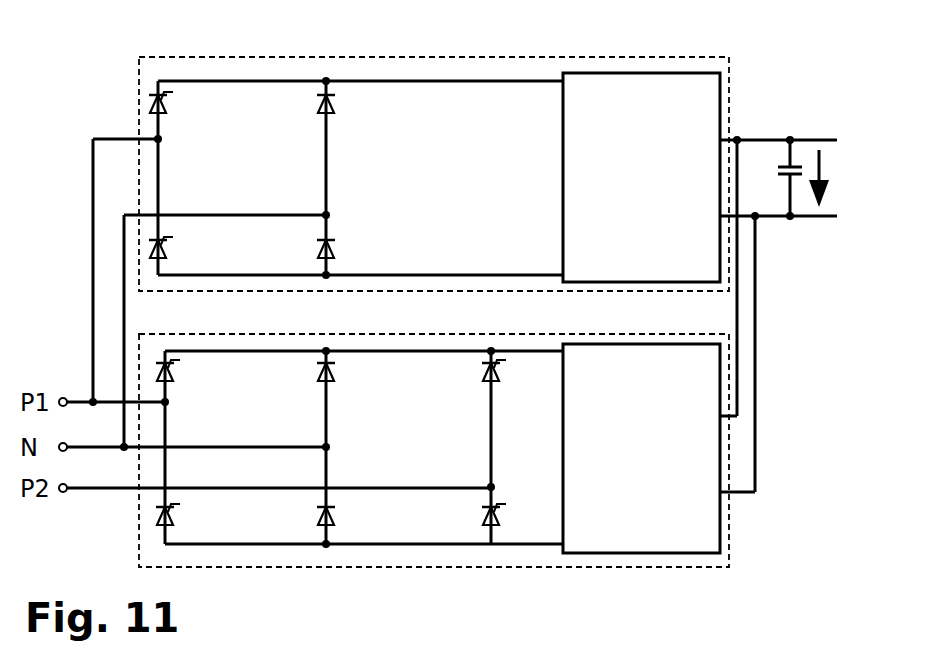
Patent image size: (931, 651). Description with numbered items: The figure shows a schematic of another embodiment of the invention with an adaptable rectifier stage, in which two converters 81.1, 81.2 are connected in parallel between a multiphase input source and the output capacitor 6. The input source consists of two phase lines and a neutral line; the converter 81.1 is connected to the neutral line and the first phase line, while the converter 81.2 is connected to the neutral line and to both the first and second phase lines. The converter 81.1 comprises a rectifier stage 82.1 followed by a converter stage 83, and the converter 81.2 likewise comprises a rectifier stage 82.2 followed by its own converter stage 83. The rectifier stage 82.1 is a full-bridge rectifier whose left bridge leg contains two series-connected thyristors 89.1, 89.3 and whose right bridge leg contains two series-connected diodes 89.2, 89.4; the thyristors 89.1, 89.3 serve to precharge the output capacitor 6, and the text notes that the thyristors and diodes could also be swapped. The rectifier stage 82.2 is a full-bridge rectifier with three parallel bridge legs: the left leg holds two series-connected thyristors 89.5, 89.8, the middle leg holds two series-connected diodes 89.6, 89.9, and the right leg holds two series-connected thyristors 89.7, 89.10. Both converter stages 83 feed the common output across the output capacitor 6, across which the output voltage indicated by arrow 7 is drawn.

The converter 81.1 is at (460, 56).
The converter 81.2 is at (438, 570).
The rectifier stage 82.1 is at (196, 64).
The rectifier stage 82.2 is at (198, 362).
The converter stage 83 is at (641, 313).
The thyristor 89.1 is at (167, 111).
The diode 89.2 is at (335, 108).
The thyristor 89.3 is at (167, 252).
The diode 89.4 is at (335, 252).
The thyristor 89.5 is at (174, 381).
The diode 89.6 is at (335, 377).
The thyristor 89.7 is at (500, 378).
The thyristor 89.8 is at (174, 519).
The diode 89.9 is at (335, 519).
The thyristor 89.10 is at (503, 512).
The output capacitor 6 is at (797, 165).
The output voltage 7 is at (832, 178).